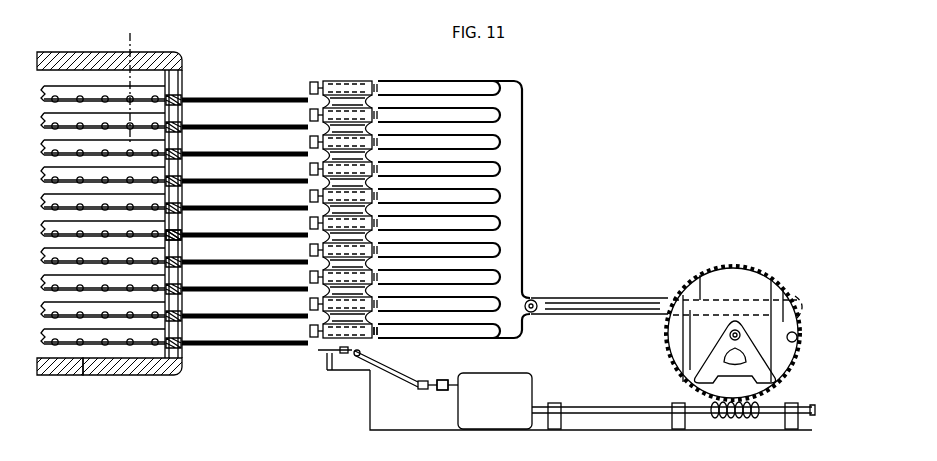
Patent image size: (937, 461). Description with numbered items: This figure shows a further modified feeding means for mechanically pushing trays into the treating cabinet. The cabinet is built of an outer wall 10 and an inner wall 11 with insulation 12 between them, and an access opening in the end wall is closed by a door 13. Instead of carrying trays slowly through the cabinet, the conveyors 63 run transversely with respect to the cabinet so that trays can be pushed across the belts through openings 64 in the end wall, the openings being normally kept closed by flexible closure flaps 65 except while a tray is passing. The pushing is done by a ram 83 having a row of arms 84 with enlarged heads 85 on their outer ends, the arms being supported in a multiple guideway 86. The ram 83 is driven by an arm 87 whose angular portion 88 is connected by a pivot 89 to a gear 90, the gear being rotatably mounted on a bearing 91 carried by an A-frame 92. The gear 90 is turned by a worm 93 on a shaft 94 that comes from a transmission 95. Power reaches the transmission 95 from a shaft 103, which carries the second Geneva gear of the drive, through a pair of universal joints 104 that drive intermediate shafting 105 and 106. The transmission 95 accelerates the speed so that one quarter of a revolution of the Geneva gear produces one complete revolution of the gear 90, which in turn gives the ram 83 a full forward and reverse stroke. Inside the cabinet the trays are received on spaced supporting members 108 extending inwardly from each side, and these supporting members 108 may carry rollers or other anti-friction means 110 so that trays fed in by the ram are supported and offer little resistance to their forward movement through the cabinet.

The outer wall 10 is at (104, 50).
The inner wall 11 is at (85, 375).
The insulation 12 is at (137, 375).
The door 13 is at (150, 43).
The conveyors 63 is at (282, 96).
The openings 64 is at (184, 84).
The closure flaps 65 is at (180, 222).
The ram 83 is at (514, 166).
The arms 84 is at (427, 70).
The enlarged heads 85 is at (308, 142).
The multiple guideway 86 is at (372, 337).
The arm 87 is at (591, 315).
The angular portion 88 is at (818, 297).
The pivot 89 is at (795, 343).
The gear 90 is at (677, 352).
The bearing 91 is at (724, 331).
The A-frame 92 is at (724, 352).
The worm 93 is at (723, 420).
The shaft 94 is at (654, 392).
The transmission 95 is at (536, 382).
The shaft 103 is at (340, 358).
The universal joints 104 is at (362, 365).
The intermediate shafting 105 is at (397, 378).
The intermediate shafting 106 is at (448, 383).
The supporting members 108 is at (97, 264).
The anti-friction means 110 is at (86, 150).